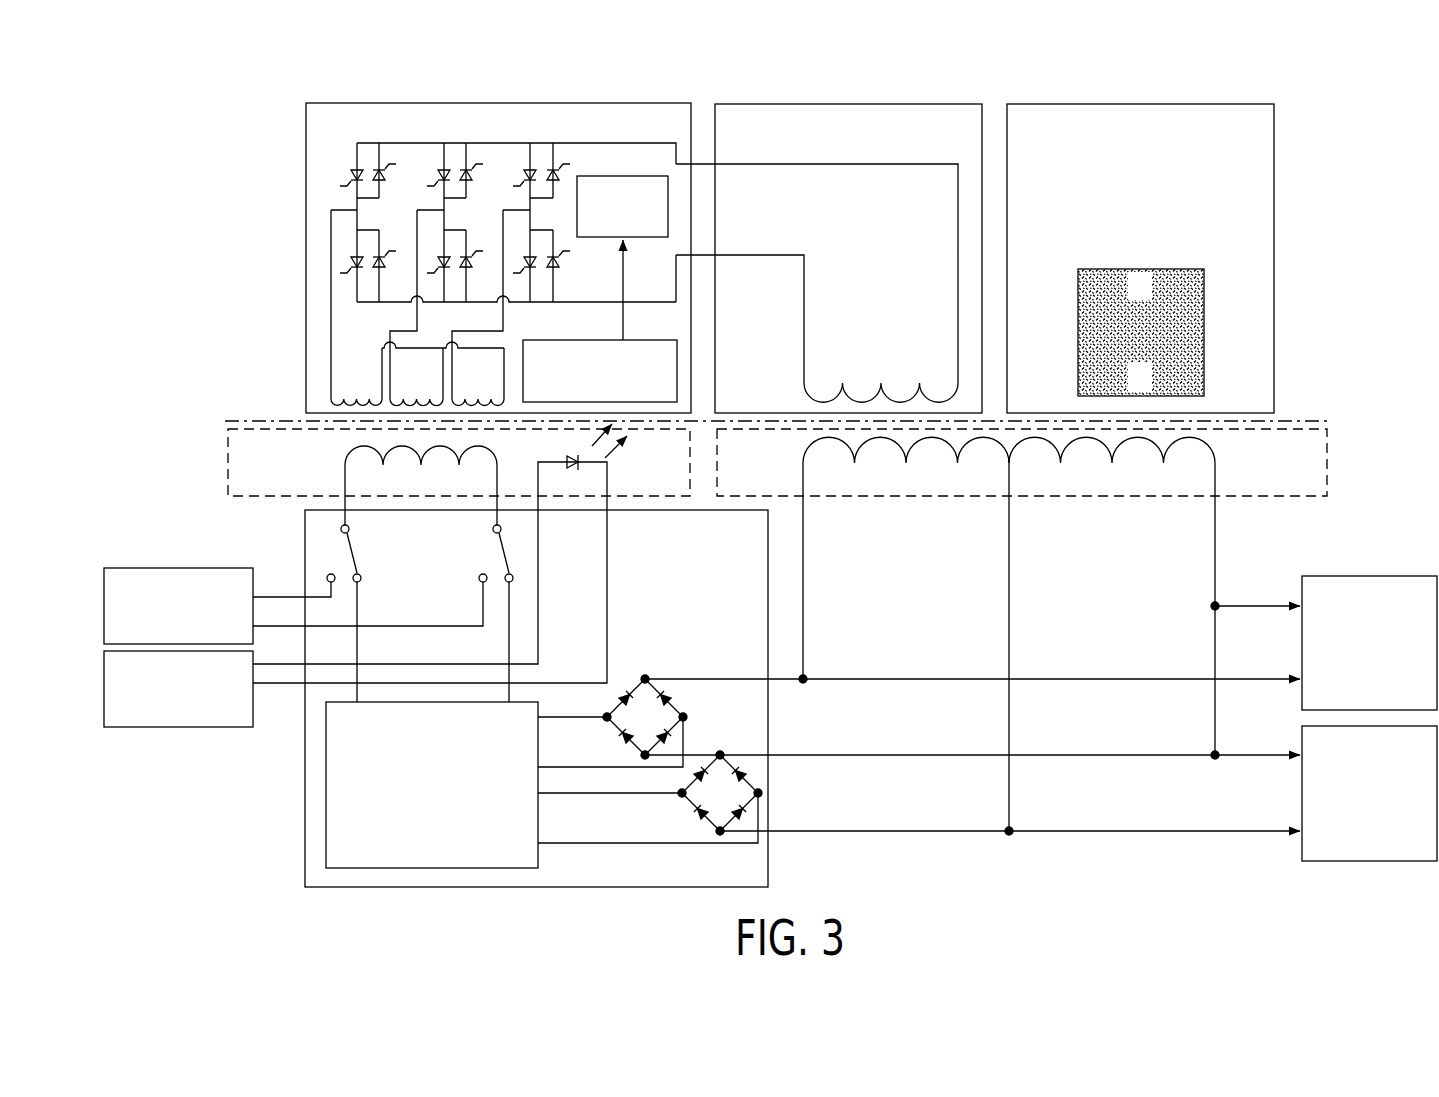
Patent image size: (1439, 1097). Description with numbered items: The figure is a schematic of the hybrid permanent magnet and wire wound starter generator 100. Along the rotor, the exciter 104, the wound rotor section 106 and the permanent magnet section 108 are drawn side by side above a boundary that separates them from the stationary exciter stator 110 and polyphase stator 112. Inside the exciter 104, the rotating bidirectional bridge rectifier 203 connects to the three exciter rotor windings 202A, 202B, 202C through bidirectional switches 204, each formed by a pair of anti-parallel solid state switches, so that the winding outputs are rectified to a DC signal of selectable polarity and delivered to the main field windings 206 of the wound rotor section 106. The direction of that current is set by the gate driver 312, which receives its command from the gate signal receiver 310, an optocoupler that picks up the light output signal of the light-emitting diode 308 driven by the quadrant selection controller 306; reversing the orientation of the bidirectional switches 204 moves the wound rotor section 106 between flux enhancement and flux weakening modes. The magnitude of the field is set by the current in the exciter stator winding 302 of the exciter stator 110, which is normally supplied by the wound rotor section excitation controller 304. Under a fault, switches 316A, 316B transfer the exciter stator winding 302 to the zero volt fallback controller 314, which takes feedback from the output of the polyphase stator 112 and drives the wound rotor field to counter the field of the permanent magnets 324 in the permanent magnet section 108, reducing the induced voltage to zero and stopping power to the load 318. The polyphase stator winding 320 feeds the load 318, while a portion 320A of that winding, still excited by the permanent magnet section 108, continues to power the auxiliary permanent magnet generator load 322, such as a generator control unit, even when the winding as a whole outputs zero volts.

The hybrid permanent magnet and wire wound starter generator 100 is at (260, 76).
The exciter 104 is at (498, 104).
The wound rotor section 106 is at (848, 104).
The permanent magnet section 108 is at (1140, 104).
The exciter stator 110 is at (243, 463).
The polyphase stator 112 is at (1305, 463).
The rotating bidirectional bridge rectifier 203 is at (331, 173).
The bidirectional switches 204 is at (368, 220).
The exciter rotor winding 202A is at (354, 384).
The exciter rotor winding 202B is at (417, 384).
The exciter rotor winding 202C is at (477, 384).
The main field windings 206 is at (845, 358).
The exciter stator winding 302 is at (333, 467).
The wound rotor section excitation controller 304 is at (178, 568).
The quadrant selection controller 306 is at (178, 727).
The light-emitting diode 308 is at (577, 468).
The gate signal receiver 310 is at (677, 372).
The gate driver 312 is at (600, 176).
The zero volt fallback controller 314 is at (305, 827).
The switch 316A is at (357, 556).
The switch 316B is at (493, 554).
The load 318 is at (1371, 576).
The polyphase stator winding 320 is at (957, 470).
The portion of the polyphase stator winding 320A is at (1138, 440).
The auxiliary permanent magnet generator load 322 is at (1371, 861).
The permanent magnets 324 is at (1140, 269).